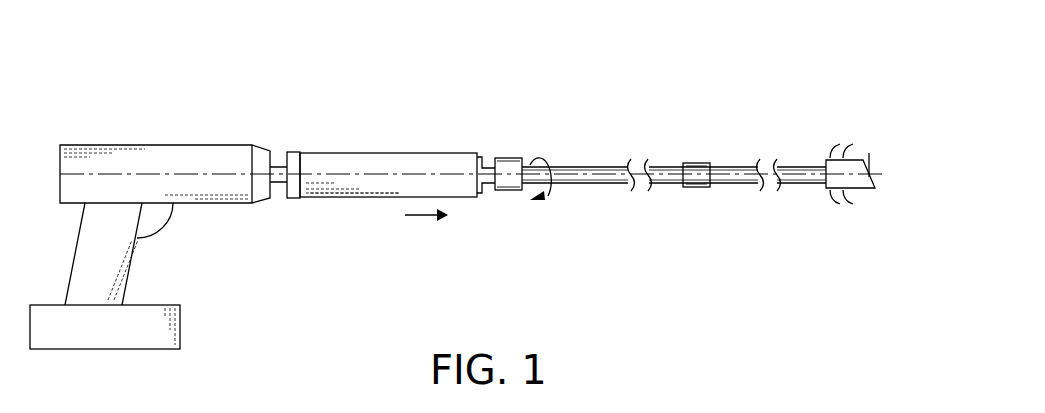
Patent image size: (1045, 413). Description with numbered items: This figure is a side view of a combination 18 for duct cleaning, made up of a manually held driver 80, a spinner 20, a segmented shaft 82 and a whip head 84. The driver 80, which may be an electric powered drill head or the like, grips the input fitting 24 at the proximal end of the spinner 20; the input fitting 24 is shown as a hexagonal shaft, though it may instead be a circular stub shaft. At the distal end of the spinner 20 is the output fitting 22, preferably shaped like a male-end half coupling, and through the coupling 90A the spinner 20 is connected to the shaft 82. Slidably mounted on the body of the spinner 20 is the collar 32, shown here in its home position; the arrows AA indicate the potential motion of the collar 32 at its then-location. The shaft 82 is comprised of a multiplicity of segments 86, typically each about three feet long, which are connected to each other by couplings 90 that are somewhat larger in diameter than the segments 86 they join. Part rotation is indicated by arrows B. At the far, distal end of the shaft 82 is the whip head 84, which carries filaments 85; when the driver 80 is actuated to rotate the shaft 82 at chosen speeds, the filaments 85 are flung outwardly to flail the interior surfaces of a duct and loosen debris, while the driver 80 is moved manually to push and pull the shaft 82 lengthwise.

The combination 18 is at (600, 52).
The driver 80 is at (170, 144).
The input fitting 24 is at (278, 163).
The spinner 20 is at (393, 151).
The collar 32 is at (367, 189).
The output fitting 22 is at (488, 165).
The coupling 90A is at (508, 191).
The shaft 82 is at (600, 166).
The segments 86 is at (585, 184).
The couplings 90 is at (695, 163).
The filaments 85 is at (858, 150).
The whip head 84 is at (872, 164).
The arrows B is at (537, 152).
The arrows AA is at (422, 219).